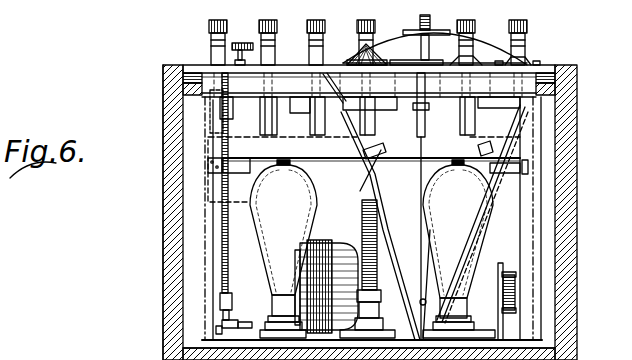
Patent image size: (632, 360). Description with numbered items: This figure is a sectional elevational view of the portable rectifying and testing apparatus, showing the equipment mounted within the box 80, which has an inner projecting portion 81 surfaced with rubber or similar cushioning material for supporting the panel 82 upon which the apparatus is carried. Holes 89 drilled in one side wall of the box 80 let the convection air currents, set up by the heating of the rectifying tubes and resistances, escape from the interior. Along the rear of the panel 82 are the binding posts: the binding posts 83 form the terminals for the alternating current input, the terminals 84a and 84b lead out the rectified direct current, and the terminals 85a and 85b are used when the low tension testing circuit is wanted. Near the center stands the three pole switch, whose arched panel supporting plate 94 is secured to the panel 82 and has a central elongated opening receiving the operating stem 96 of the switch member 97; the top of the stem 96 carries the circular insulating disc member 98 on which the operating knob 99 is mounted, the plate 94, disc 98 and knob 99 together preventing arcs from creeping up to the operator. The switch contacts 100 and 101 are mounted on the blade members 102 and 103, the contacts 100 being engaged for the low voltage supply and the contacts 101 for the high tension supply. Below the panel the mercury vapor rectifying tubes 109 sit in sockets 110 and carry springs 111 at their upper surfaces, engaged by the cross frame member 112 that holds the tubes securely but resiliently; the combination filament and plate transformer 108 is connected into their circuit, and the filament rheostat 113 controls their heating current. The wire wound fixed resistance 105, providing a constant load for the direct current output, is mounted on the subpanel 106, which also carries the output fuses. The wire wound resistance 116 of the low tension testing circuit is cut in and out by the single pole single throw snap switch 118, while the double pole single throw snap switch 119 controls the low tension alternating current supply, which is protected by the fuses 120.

The box 80 is at (165, 107).
The inner projecting portion 81 is at (181, 83).
The panel 82 is at (196, 70).
The binding posts 83 is at (308, 24).
The terminal 84a is at (375, 18).
The terminal 84b is at (415, 123).
The terminal 85a is at (474, 25).
The terminal 85b is at (522, 22).
The holes 89 is at (163, 173).
The arched panel supporting plate 94 is at (490, 56).
The operating stem 96 is at (428, 52).
The switch member 97 is at (423, 172).
The circular insulating disc member 98 is at (446, 31).
The operating knob 99 is at (425, 30).
The switch contacts 100 is at (366, 180).
The switch contacts 101 is at (490, 147).
The blade member 102 is at (359, 192).
The blade member 103 is at (514, 104).
The wire wound fixed resistance 105 is at (515, 290).
The subpanel 106 is at (508, 252).
The transformer 108 is at (350, 241).
The mercury vapor rectifying tubes 109 is at (262, 250).
The sockets 110 is at (270, 327).
The springs 111 is at (258, 174).
The cross frame member 112 is at (318, 158).
The filament rheostat 113 is at (355, 47).
The wire wound resistance 116 is at (380, 226).
The single pole single throw snap switch 118 is at (503, 63).
The double pole single throw snap switch 119 is at (240, 64).
The fuses 120 is at (240, 318).